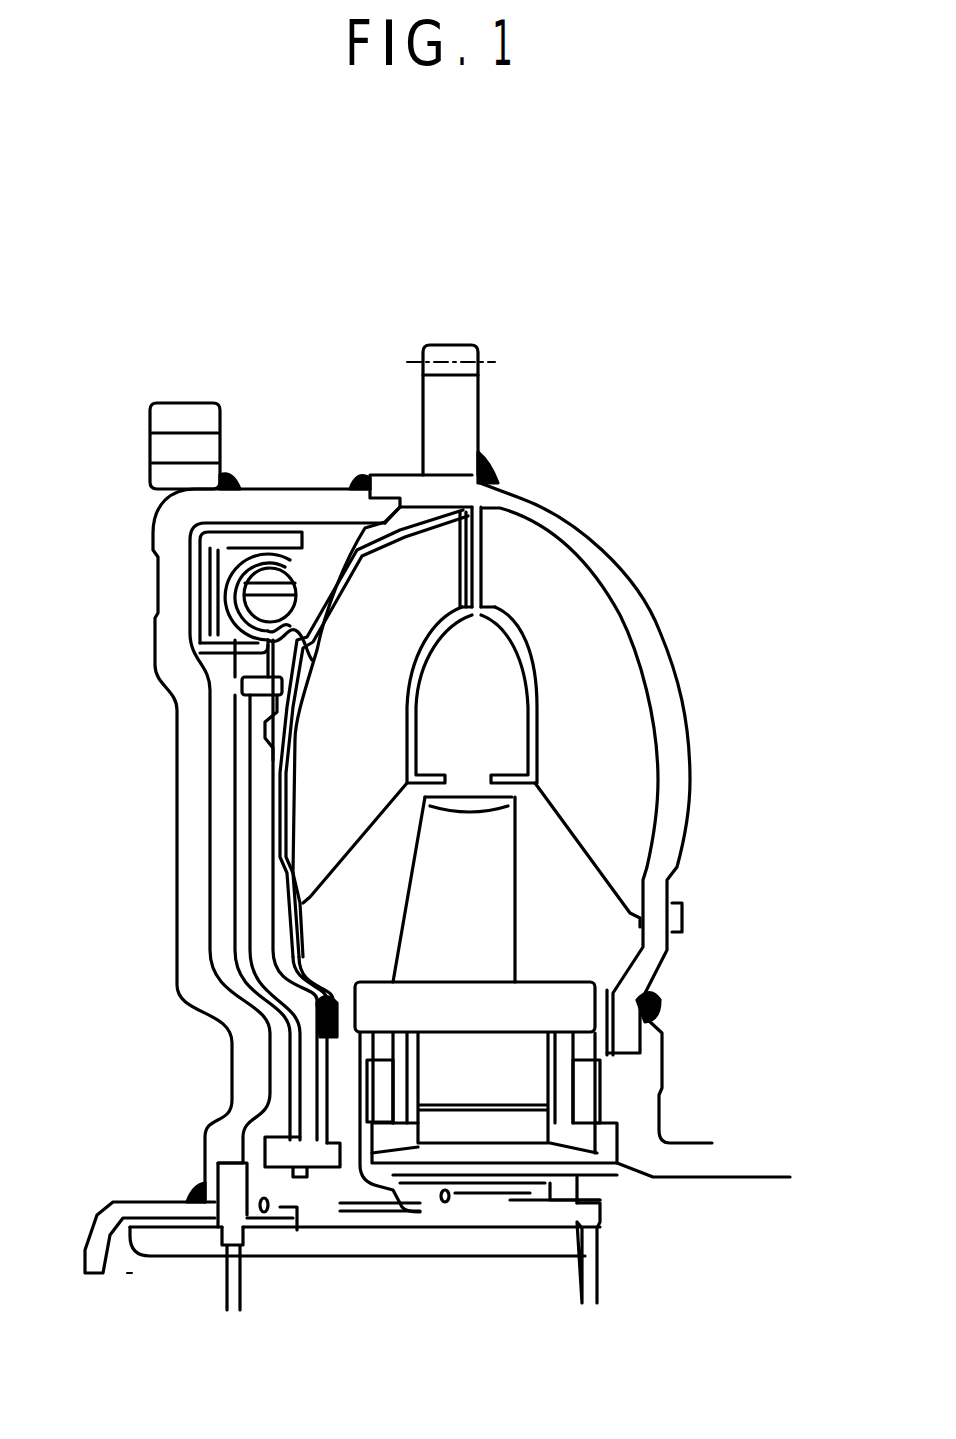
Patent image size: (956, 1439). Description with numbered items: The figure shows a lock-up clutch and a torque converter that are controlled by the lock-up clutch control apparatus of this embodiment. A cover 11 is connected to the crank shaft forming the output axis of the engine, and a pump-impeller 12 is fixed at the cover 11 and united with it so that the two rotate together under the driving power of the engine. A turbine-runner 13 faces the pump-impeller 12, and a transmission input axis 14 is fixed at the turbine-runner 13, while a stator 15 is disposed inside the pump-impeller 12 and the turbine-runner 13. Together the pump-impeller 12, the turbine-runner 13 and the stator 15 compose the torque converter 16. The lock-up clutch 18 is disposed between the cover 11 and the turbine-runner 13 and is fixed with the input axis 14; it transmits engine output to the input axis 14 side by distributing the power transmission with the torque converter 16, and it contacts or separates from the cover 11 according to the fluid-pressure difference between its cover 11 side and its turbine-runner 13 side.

The cover 11 is at (193, 893).
The pump-impeller 12 is at (625, 685).
The turbine-runner 13 is at (323, 758).
The transmission input axis 14 is at (360, 1240).
The stator 15 is at (497, 928).
The torque converter 16 is at (655, 560).
The lock-up clutch 18 is at (207, 588).